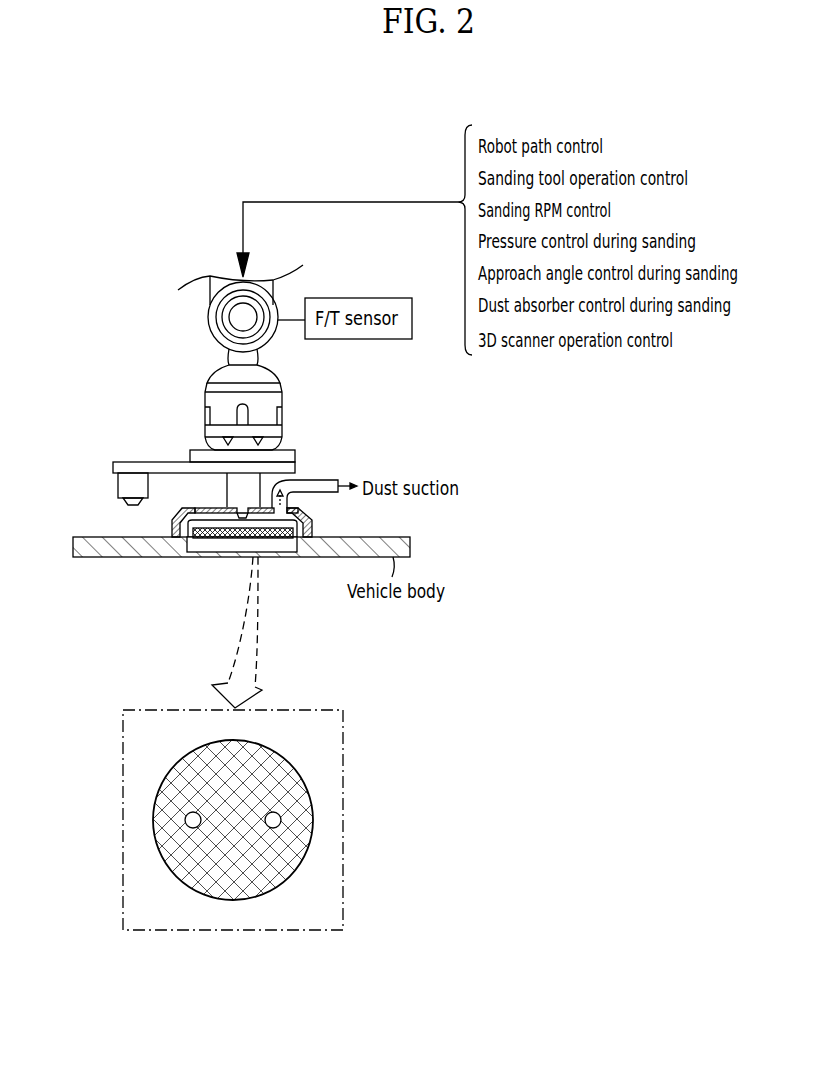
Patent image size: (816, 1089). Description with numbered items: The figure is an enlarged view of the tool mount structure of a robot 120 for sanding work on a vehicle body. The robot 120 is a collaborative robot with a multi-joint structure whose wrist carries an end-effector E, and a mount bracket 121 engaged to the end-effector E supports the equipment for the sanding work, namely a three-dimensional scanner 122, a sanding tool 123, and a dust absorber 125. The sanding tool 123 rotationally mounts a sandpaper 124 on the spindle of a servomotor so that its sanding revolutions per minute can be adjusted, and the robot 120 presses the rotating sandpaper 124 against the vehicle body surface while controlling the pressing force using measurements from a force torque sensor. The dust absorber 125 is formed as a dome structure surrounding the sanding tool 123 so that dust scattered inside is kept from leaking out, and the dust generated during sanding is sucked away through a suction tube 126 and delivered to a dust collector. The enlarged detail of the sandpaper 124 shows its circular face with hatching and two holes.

The robot 120 is at (186, 329).
The mount bracket 121 is at (130, 460).
The 3D scanner 122 is at (118, 490).
The sanding tool 123 is at (195, 510).
The sandpaper 124 is at (205, 540).
The dust absorber 125 is at (308, 518).
The suction tube 126 is at (317, 480).
The end-effector E is at (283, 407).